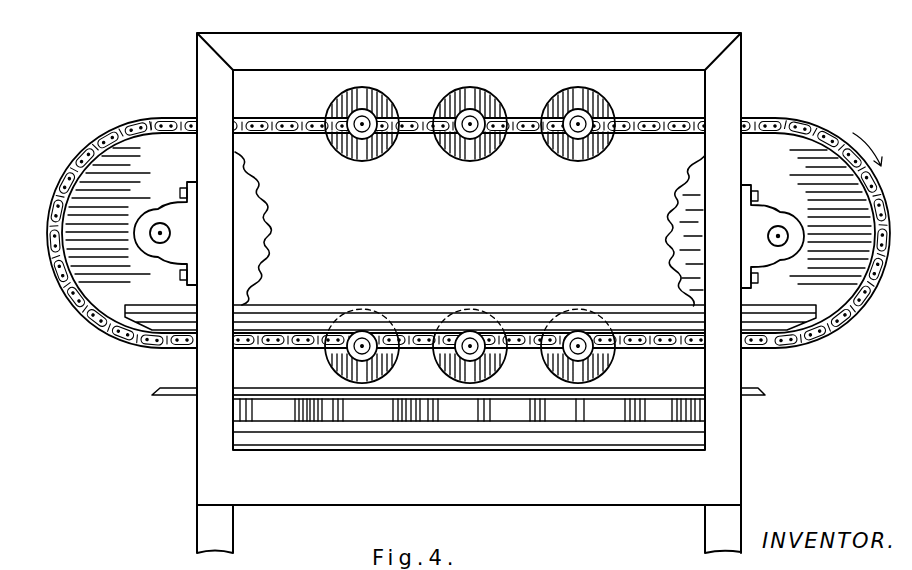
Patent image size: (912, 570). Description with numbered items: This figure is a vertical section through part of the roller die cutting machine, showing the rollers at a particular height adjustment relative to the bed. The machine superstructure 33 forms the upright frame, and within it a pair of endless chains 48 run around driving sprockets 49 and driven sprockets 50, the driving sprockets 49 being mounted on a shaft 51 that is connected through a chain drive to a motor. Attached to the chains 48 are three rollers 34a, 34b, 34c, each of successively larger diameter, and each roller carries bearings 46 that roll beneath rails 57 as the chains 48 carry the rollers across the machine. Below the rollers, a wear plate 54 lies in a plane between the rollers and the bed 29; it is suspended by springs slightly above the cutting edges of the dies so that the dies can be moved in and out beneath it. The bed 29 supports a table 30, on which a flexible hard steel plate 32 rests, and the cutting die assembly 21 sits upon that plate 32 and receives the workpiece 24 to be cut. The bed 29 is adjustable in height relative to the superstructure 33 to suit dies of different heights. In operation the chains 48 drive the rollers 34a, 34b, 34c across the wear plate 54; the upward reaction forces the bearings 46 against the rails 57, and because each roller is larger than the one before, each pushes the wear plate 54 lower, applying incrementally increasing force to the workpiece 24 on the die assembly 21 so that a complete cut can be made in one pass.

The cutting die assembly 21 is at (233, 408).
The workpiece 24 is at (314, 399).
The bed 29 is at (482, 489).
The table 30 is at (512, 449).
The flexible hard steel plate 32 is at (398, 433).
The machine superstructure 33 is at (594, 46).
The roller 34a is at (363, 161).
The roller 34b is at (471, 158).
The roller 34c is at (593, 161).
The bearings 46 is at (462, 117).
The endless chains 48 is at (292, 134).
The driving sprockets 49 is at (676, 222).
The driven sprockets 50 is at (272, 228).
The shaft 51 is at (781, 226).
The wear plate 54 is at (763, 393).
The rails 57 is at (318, 308).